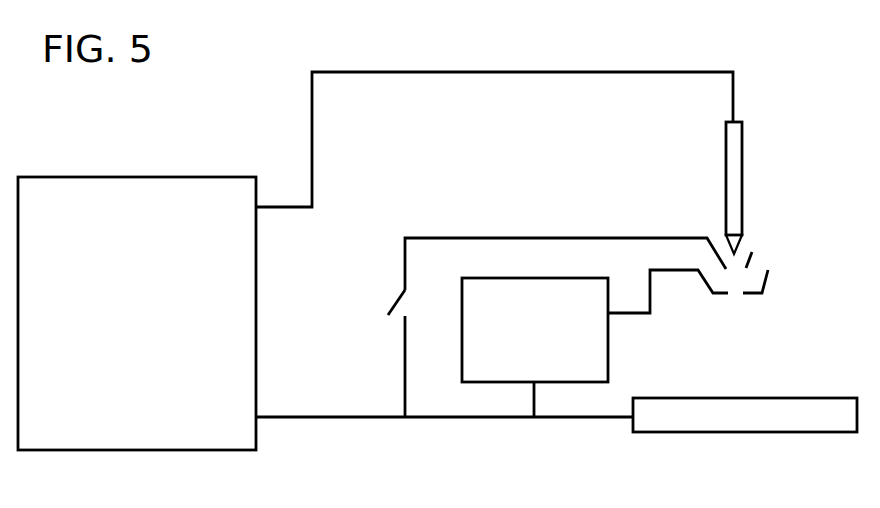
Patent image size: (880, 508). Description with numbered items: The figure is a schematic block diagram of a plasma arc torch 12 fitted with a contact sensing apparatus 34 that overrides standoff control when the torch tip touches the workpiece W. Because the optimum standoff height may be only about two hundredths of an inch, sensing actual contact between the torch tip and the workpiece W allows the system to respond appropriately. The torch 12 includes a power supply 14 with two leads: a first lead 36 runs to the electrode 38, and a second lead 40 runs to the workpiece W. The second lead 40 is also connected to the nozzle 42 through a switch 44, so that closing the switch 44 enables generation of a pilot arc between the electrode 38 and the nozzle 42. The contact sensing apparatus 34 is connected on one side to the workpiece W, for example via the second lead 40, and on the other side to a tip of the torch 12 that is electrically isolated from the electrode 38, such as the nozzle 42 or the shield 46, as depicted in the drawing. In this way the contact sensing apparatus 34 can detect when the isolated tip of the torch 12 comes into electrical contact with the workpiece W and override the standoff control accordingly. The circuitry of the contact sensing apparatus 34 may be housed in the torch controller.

The plasma arc torch 12 is at (759, 54).
The power supply 14 is at (134, 177).
The contact sensing apparatus 34 is at (494, 278).
The first lead 36 is at (455, 71).
The electrode 38 is at (743, 170).
The second lead 40 is at (325, 419).
The nozzle 42 is at (758, 253).
The switch 44 is at (396, 300).
The shield 46 is at (766, 285).
The workpiece W is at (736, 433).